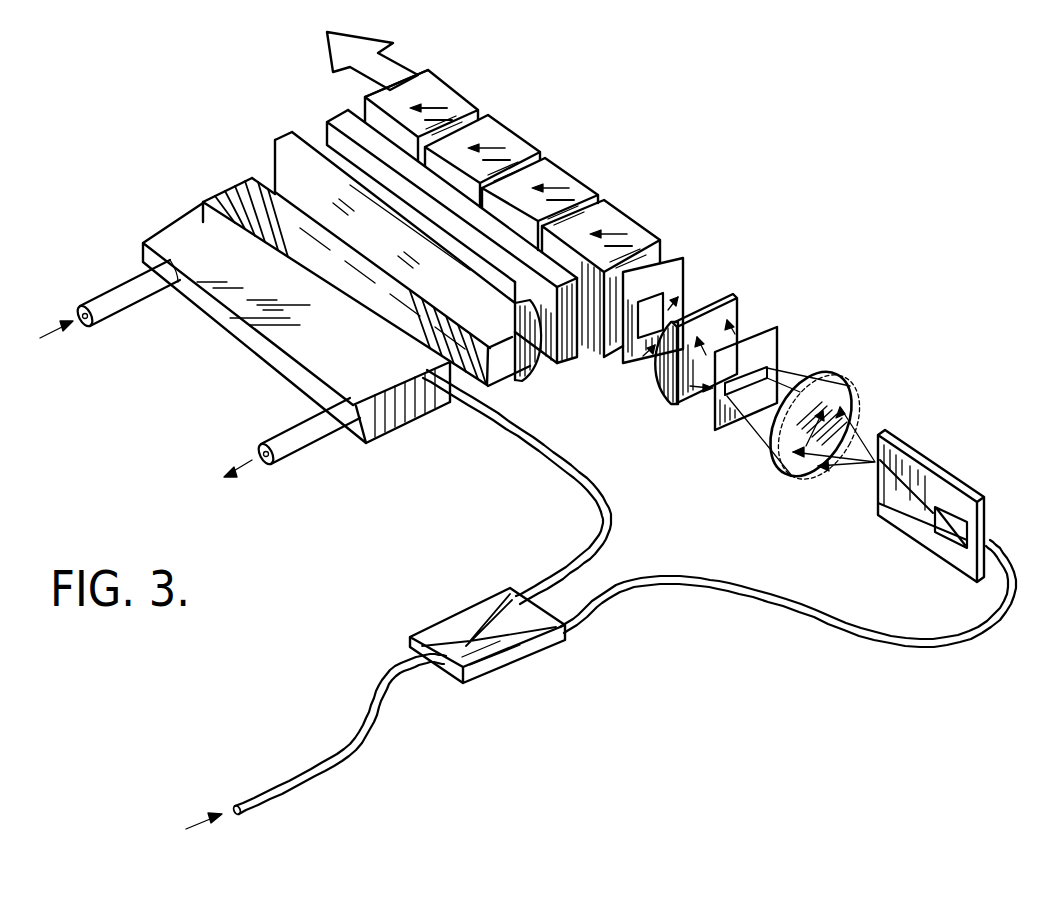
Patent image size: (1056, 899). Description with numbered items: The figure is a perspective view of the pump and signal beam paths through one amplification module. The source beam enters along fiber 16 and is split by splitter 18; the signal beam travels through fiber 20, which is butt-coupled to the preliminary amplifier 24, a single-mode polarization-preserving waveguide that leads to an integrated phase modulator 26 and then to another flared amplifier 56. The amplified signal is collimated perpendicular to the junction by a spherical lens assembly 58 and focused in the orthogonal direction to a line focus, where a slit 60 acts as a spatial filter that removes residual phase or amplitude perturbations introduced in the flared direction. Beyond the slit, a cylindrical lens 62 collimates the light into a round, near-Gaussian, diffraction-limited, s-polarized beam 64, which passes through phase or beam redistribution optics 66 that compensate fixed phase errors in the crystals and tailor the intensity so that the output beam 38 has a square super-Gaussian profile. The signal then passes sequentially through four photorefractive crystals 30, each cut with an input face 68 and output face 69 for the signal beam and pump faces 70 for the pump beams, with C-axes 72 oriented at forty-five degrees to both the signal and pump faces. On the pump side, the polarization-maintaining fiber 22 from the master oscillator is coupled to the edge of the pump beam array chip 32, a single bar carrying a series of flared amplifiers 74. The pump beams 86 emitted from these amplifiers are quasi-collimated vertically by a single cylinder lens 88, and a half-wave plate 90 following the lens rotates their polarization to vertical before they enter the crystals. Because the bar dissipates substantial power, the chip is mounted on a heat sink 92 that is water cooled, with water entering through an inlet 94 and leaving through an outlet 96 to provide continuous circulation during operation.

The fiber 16 is at (343, 752).
The splitter 18 is at (464, 620).
The fiber 20 is at (783, 603).
The polarization-maintaining fiber 22 is at (140, 170).
The preliminary amplifier 24 is at (912, 434).
The integrated phase modulator 26 is at (945, 535).
The photorefractive crystals 30 is at (660, 238).
The pump beam array chip 32 is at (212, 197).
The output beam 38 is at (372, 45).
The flared amplifier 56 is at (897, 492).
The spherical lens assembly 58 is at (833, 374).
The slit 60 is at (777, 328).
The cylindrical lens 62 is at (733, 300).
The s-polarized beam 64 is at (688, 305).
The phase or beam redistribution optics 66 is at (686, 263).
The input face 68 is at (665, 262).
The output face 69 is at (411, 70).
The pump faces 70 is at (637, 343).
The C-axes 72 is at (428, 98).
The flared amplifiers 74 is at (245, 182).
The pump beams 86 is at (505, 362).
The cylinder lens 88 is at (276, 166).
The half-wave plate 90 is at (325, 120).
The heat sink 92 is at (246, 342).
The inlet 94 is at (100, 290).
The outlet 96 is at (300, 440).